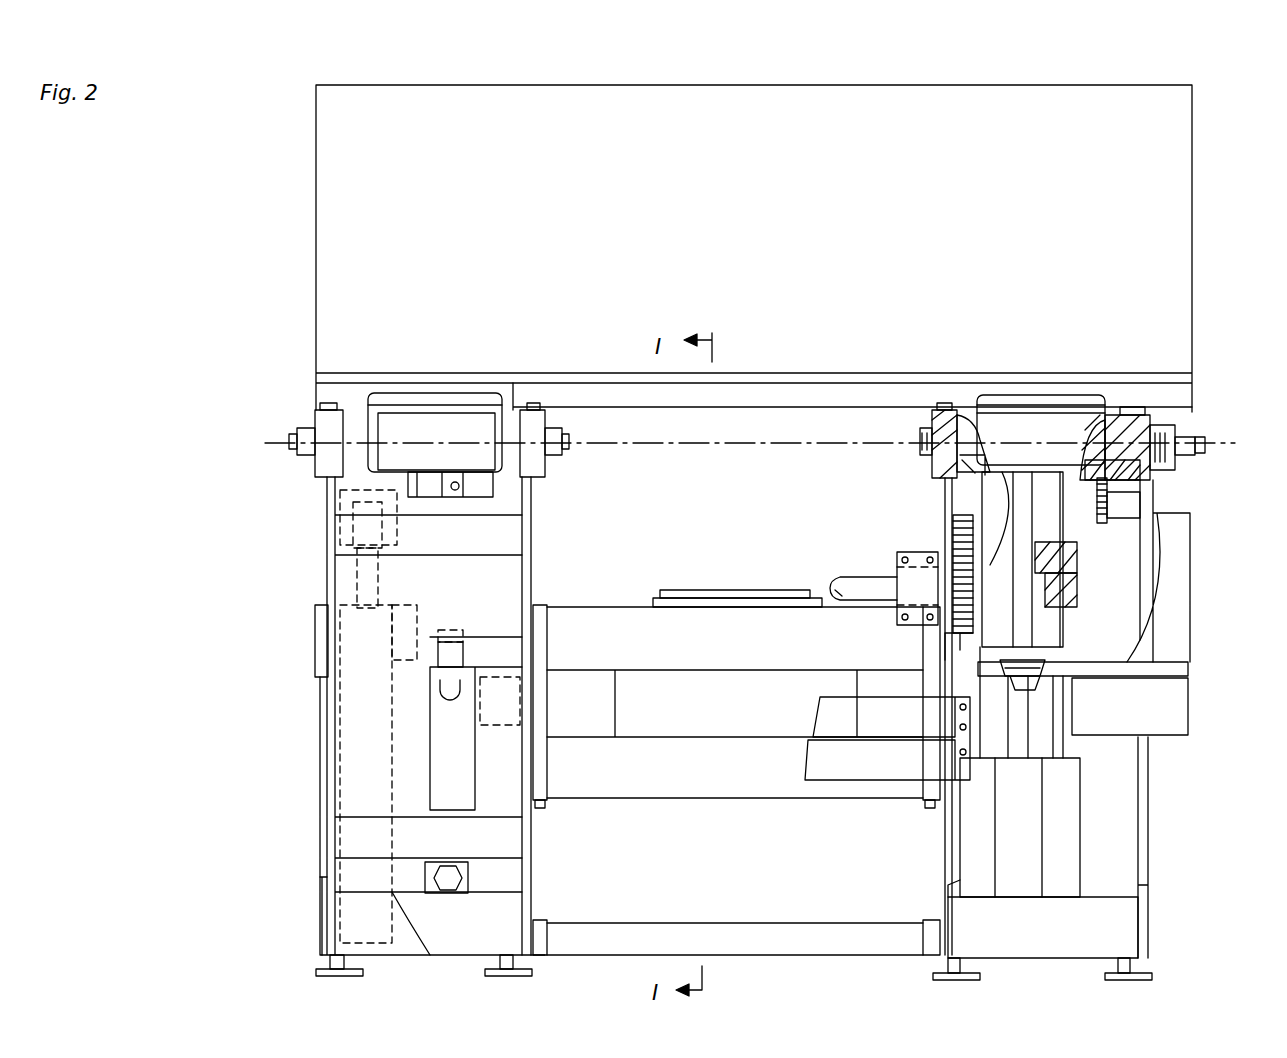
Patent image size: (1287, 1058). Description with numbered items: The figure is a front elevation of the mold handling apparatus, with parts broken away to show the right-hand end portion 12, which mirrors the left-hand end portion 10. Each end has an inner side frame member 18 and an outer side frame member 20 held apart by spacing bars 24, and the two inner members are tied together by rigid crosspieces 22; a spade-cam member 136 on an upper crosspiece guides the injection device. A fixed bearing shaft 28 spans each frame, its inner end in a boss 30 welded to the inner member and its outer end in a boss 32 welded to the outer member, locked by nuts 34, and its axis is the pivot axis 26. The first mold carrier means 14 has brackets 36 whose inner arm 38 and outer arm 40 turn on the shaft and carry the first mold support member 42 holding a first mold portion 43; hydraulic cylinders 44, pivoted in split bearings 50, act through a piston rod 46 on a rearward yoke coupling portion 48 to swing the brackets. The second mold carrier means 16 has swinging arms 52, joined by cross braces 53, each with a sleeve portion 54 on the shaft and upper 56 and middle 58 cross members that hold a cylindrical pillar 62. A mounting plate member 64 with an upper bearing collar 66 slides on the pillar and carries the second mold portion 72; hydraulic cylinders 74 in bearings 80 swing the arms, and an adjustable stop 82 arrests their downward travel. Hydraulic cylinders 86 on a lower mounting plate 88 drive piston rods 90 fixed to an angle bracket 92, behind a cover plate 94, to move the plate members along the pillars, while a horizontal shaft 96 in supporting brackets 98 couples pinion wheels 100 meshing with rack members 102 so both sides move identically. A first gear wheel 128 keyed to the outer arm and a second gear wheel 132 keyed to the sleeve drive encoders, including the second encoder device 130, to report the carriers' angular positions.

The left-hand end portion 10 is at (558, 534).
The right-hand end portion 12 is at (892, 472).
The first mold carrier means 14 is at (1134, 355).
The second mold carrier means 16 is at (1103, 758).
The inner side frame member 18 is at (525, 836).
The outer side frame member 20 is at (325, 846).
The crosspieces 22 is at (603, 650).
The spacing bars 24 is at (1045, 938).
The pivot axis 26 is at (732, 447).
The bearing shaft 28 is at (1185, 443).
The inner shaft supporting boss 30 is at (940, 415).
The outer shaft supporting boss 32 is at (1160, 415).
The nuts 34 is at (918, 445).
The brackets 36 is at (1002, 392).
The inner arm 38 is at (968, 415).
The outer arm 40 is at (1115, 400).
The first mold support member 42 is at (1038, 380).
The first mold portion 43 is at (478, 202).
The hydraulic cylinders 44 is at (350, 722).
The piston rod 46 is at (347, 574).
The rearward yoke coupling portion 48 is at (347, 533).
The split bearings 50 is at (320, 657).
The swinging arms 52 is at (1068, 528).
The cross braces 53 is at (887, 738).
The sleeve portion 54 is at (1047, 450).
The upper cross member 56 is at (1042, 465).
The middle cross member 58 is at (1045, 648).
The cylindrical pillar 62 is at (1025, 600).
The mounting plate member 64 is at (1003, 520).
The upper bearing collar 66 is at (1078, 548).
The second mold portion 72 is at (1165, 648).
The hydraulic cylinders 74 is at (440, 785).
The bearings 80 is at (470, 728).
The adjustable stop 82 is at (450, 868).
The hydraulic cylinders 86 is at (1028, 830).
The lower mounting plate 88 is at (975, 878).
The piston rods 90 is at (1025, 700).
The angle bracket 92 is at (1167, 718).
The cover plate 94 is at (1180, 675).
The horizontal shaft 96 is at (835, 578).
The supporting brackets 98 is at (905, 577).
The pinion wheel 100 is at (953, 570).
The rack member 102 is at (960, 623).
The first gear wheel 128 is at (1105, 480).
The second encoder device 130 is at (1153, 530).
The second gear wheel 132 is at (1130, 510).
The spade-cam member 136 is at (705, 597).